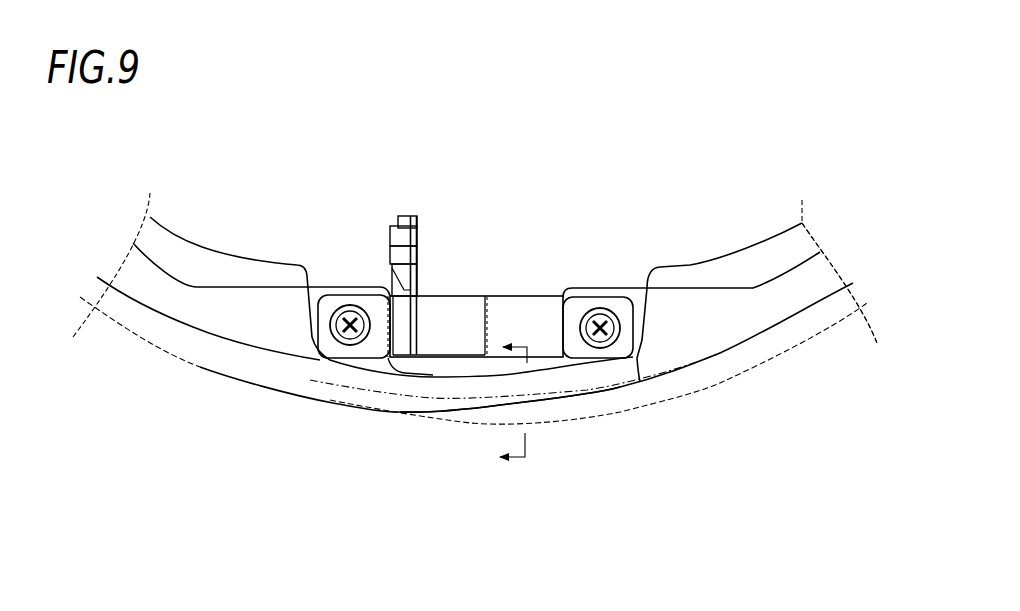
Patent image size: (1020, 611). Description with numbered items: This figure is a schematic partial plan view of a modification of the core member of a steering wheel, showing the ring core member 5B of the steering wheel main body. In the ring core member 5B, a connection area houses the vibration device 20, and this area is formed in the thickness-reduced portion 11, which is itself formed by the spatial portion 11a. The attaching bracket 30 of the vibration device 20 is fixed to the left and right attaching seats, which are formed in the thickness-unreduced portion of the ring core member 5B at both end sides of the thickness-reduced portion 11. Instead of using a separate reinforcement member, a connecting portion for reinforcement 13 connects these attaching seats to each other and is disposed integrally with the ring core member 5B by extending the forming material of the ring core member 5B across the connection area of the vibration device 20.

The ring core member 5B is at (828, 280).
The thickness-reduced portion 11 is at (391, 381).
The spatial portion 11a is at (433, 367).
The connecting portion for reinforcement 13 is at (460, 390).
The vibration device 20 is at (526, 272).
The attaching bracket 30 is at (500, 292).